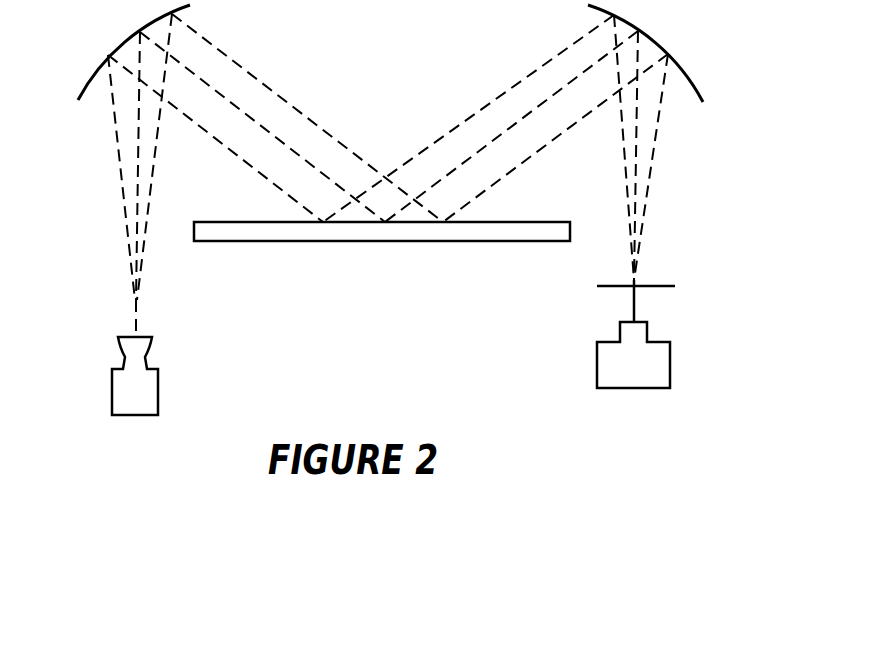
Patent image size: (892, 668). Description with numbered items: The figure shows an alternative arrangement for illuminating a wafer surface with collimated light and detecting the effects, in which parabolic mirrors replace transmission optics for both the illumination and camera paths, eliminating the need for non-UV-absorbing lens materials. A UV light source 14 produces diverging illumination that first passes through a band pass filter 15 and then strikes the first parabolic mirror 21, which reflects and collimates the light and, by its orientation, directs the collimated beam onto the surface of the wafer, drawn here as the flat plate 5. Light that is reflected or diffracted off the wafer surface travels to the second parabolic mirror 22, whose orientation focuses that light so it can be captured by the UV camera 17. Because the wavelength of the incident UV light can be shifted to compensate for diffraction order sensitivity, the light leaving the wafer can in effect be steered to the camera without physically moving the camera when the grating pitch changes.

The second parabolic mirror 22 is at (90, 72).
The first parabolic mirror 21 is at (688, 66).
The sample plate 5 is at (385, 242).
The UV camera 17 is at (112, 381).
The band pass filter 15 is at (665, 284).
The UV light source 14 is at (671, 358).